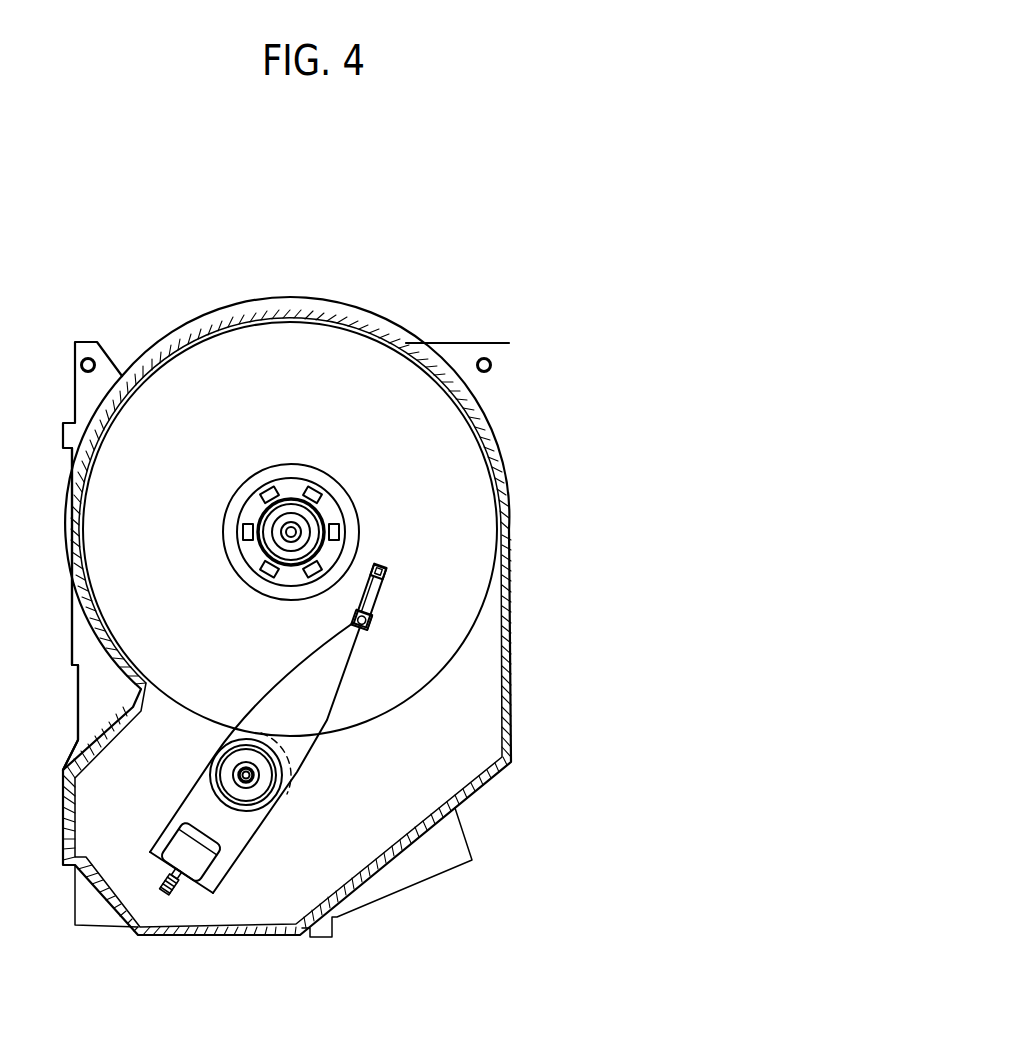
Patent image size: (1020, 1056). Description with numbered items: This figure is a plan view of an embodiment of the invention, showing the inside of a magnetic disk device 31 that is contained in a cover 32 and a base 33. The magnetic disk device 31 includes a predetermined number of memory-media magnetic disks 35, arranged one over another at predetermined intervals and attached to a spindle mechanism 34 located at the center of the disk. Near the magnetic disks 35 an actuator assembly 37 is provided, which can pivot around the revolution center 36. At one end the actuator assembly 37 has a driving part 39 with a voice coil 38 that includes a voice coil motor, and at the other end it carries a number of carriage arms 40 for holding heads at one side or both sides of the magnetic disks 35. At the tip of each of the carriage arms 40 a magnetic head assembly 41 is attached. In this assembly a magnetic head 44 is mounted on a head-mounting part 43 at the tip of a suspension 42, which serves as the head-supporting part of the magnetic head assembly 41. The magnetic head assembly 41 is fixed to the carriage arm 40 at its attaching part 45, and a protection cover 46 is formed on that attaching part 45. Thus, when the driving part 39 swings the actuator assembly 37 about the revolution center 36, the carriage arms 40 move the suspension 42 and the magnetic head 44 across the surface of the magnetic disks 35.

The magnetic disk device 31 is at (92, 267).
The cover 32 is at (485, 403).
The base 33 is at (72, 612).
The spindle mechanism 34 is at (256, 528).
The magnetic disks 35 is at (473, 497).
The revolution center 36 is at (222, 773).
The actuator assembly 37 is at (403, 822).
The voice coil 38 is at (205, 865).
The driving part 39 is at (261, 921).
The carriage arms 40 is at (313, 720).
The magnetic head assembly 41 is at (497, 622).
The suspension 42 is at (373, 589).
The head-mounting part 43 is at (389, 559).
The magnetic head 44 is at (388, 567).
The attaching part 45 is at (350, 614).
The protection cover 46 is at (372, 617).